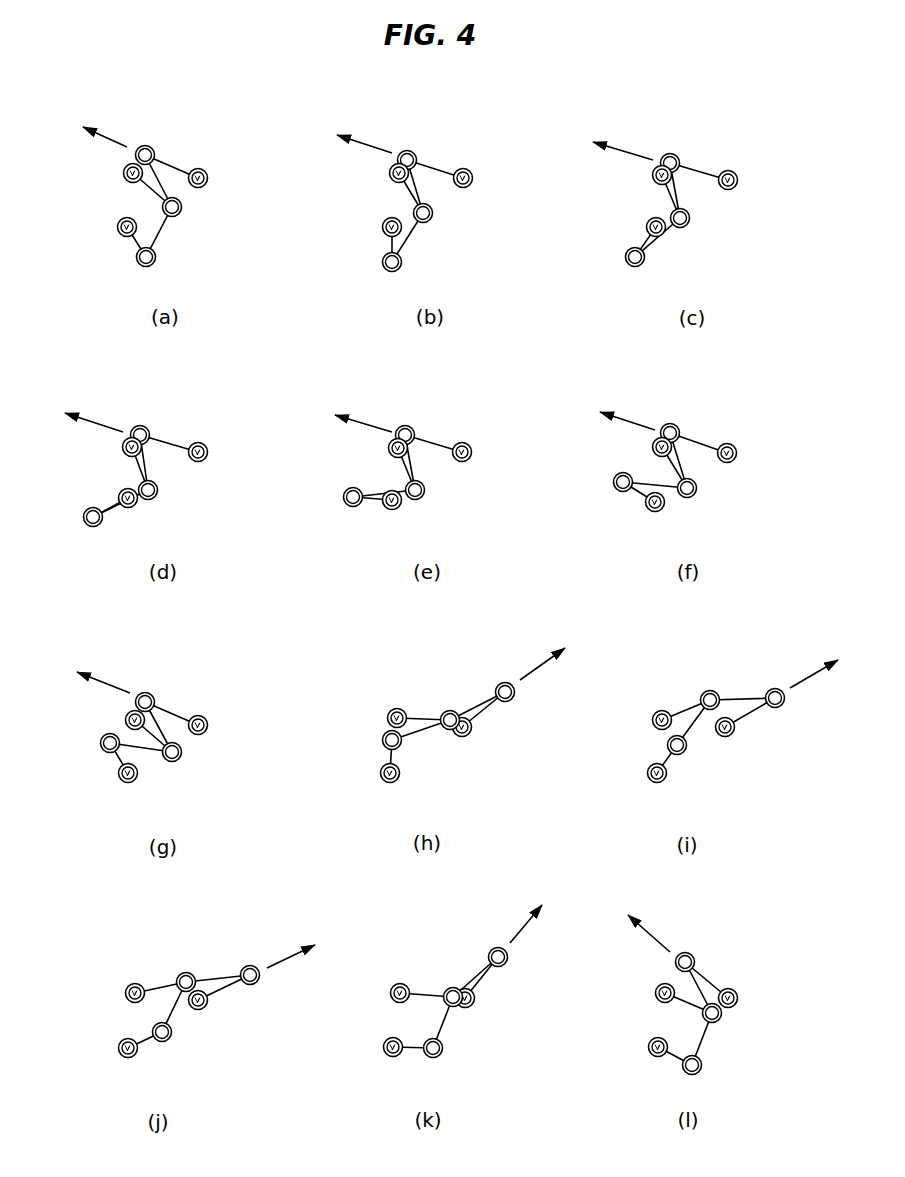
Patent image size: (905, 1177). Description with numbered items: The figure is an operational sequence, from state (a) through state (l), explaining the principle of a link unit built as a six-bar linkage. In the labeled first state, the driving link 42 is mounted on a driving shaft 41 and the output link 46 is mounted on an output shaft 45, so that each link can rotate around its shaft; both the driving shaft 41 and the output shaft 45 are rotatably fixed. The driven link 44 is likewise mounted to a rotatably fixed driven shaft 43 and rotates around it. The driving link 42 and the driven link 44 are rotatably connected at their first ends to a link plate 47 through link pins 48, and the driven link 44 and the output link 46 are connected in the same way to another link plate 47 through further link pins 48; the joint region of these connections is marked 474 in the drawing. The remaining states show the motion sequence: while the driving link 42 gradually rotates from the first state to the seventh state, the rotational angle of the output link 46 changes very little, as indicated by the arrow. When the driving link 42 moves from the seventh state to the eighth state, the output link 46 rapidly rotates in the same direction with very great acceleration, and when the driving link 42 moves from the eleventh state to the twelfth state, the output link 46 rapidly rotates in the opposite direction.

The driving shaft 41 is at (118, 226).
The driving link 42 is at (137, 250).
The driven shaft 43 is at (124, 171).
The driven link 44 is at (151, 189).
The output shaft 45 is at (207, 178).
The output link 46 is at (173, 160).
The link plate 47 is at (164, 226).
The connecting joint 474 is at (166, 186).
The link pin 48 is at (144, 146).